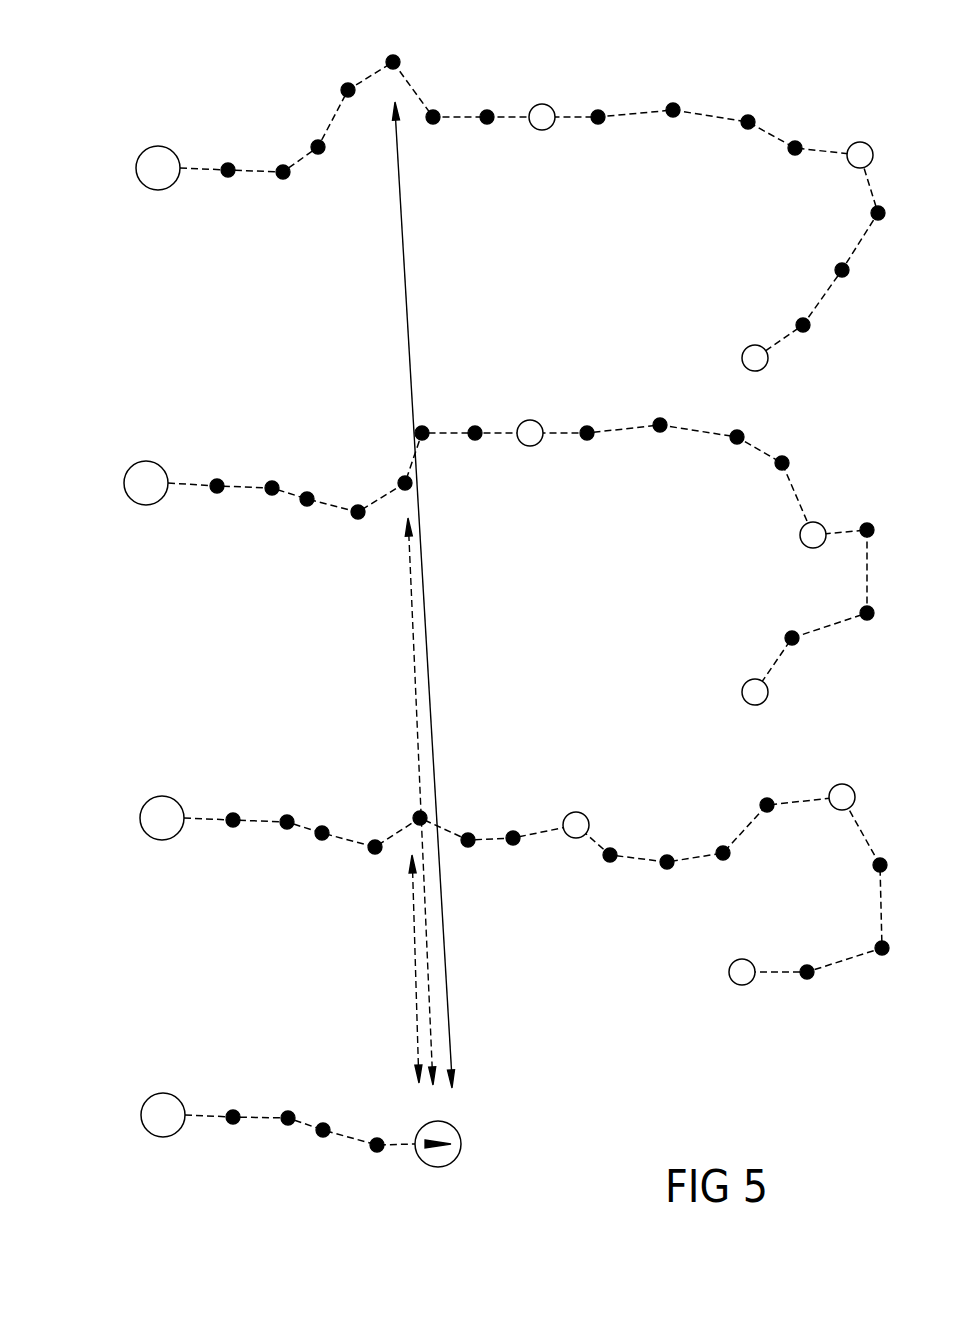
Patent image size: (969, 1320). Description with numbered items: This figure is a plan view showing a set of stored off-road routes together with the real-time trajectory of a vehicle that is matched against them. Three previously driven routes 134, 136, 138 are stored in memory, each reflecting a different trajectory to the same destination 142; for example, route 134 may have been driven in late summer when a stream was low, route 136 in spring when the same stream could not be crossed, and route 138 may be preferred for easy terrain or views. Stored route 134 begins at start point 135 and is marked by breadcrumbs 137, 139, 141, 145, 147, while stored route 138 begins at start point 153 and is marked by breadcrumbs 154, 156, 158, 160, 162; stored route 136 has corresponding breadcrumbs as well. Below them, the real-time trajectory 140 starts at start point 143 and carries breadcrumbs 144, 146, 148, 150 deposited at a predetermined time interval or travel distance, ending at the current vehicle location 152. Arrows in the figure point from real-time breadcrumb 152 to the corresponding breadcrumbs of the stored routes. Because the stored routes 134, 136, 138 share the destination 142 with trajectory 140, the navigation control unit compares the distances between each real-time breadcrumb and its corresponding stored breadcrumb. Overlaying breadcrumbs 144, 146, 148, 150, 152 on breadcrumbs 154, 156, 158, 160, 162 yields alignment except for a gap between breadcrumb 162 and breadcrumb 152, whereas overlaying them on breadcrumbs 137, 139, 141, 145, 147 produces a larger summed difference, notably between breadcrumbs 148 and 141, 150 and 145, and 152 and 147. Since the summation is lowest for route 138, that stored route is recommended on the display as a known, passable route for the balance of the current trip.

The stored off-road route 134 is at (476, 192).
The start point 135 is at (163, 189).
The breadcrumb 137 is at (228, 177).
The breadcrumb 139 is at (286, 178).
The breadcrumb 141 is at (315, 140).
The breadcrumb 145 is at (344, 85).
The breadcrumb 147 is at (398, 56).
The destination 142 is at (745, 350).
The stored off-road route 136 is at (464, 555).
The stored off-road route 138 is at (479, 869).
The start point 153 is at (148, 838).
The breadcrumb 154 is at (232, 828).
The breadcrumb 156 is at (287, 830).
The breadcrumb 158 is at (323, 840).
The breadcrumb 160 is at (375, 840).
The breadcrumb 162 is at (418, 811).
The real-time trajectory 140 is at (277, 1137).
The start point 143 is at (142, 1117).
The breadcrumb 144 is at (233, 1125).
The breadcrumb 146 is at (288, 1126).
The breadcrumb 148 is at (323, 1137).
The breadcrumb 150 is at (378, 1152).
The current vehicle location 152 is at (456, 1132).